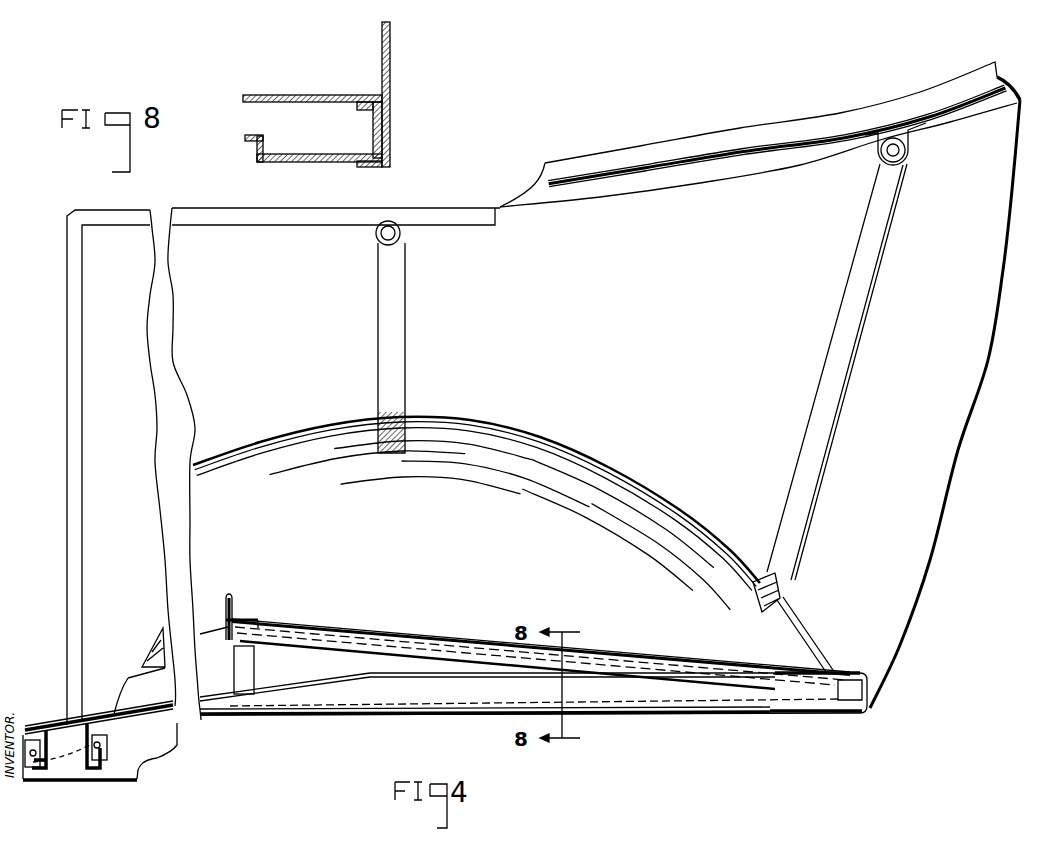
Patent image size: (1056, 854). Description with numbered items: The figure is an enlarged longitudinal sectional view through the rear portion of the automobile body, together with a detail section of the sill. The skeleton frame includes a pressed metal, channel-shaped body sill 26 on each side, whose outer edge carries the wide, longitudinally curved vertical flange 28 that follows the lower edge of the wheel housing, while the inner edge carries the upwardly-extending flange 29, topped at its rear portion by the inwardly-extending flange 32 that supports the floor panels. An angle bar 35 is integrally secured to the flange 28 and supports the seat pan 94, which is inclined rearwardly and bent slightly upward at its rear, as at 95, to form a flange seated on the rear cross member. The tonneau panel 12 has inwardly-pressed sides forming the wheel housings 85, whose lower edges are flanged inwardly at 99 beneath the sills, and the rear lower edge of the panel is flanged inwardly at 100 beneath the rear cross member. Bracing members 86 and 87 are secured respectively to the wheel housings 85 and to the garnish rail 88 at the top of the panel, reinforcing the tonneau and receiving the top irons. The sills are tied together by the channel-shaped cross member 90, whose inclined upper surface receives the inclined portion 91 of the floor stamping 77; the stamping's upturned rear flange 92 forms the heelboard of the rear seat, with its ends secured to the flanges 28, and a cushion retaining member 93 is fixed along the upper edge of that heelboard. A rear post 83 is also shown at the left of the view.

In FIG. 4, the tonneau panel 12 is at (992, 336).
In FIG. 8, the body sill 26 is at (315, 162).
In FIG. 8, the vertical flange 28 is at (373, 135).
In FIG. 8, the inner flange 29 is at (257, 150).
In FIG. 8, the inwardly-extending flange 32 is at (250, 135).
In FIG. 4, the inwardly-extending flange 32 is at (305, 685).
In FIG. 8, the angle bar 35 is at (357, 108).
In FIG. 4, the floor stamping 77 is at (146, 706).
In FIG. 4, the post 83 is at (70, 455).
In FIG. 8, the wheel housing 85 is at (391, 55).
In FIG. 4, the wheel housing 85 is at (595, 478).
In FIG. 4, the bracing member 86 is at (833, 356).
In FIG. 4, the bracing member 87 is at (390, 333).
In FIG. 4, the garnish rail 88 is at (920, 100).
In FIG. 4, the channel-shaped cross member 90 is at (55, 745).
In FIG. 4, the inclined portion 91 is at (99, 733).
In FIG. 4, the upturned flange 92 is at (240, 650).
In FIG. 4, the cushion retaining member 93 is at (240, 603).
In FIG. 8, the seat pan 94 is at (312, 76).
In FIG. 4, the seat pan 94 is at (372, 647).
In FIG. 4, the upwardly bent flange 95 is at (828, 670).
In FIG. 8, the inward flange 99 is at (370, 167).
In FIG. 4, the inward flange 100 is at (850, 713).